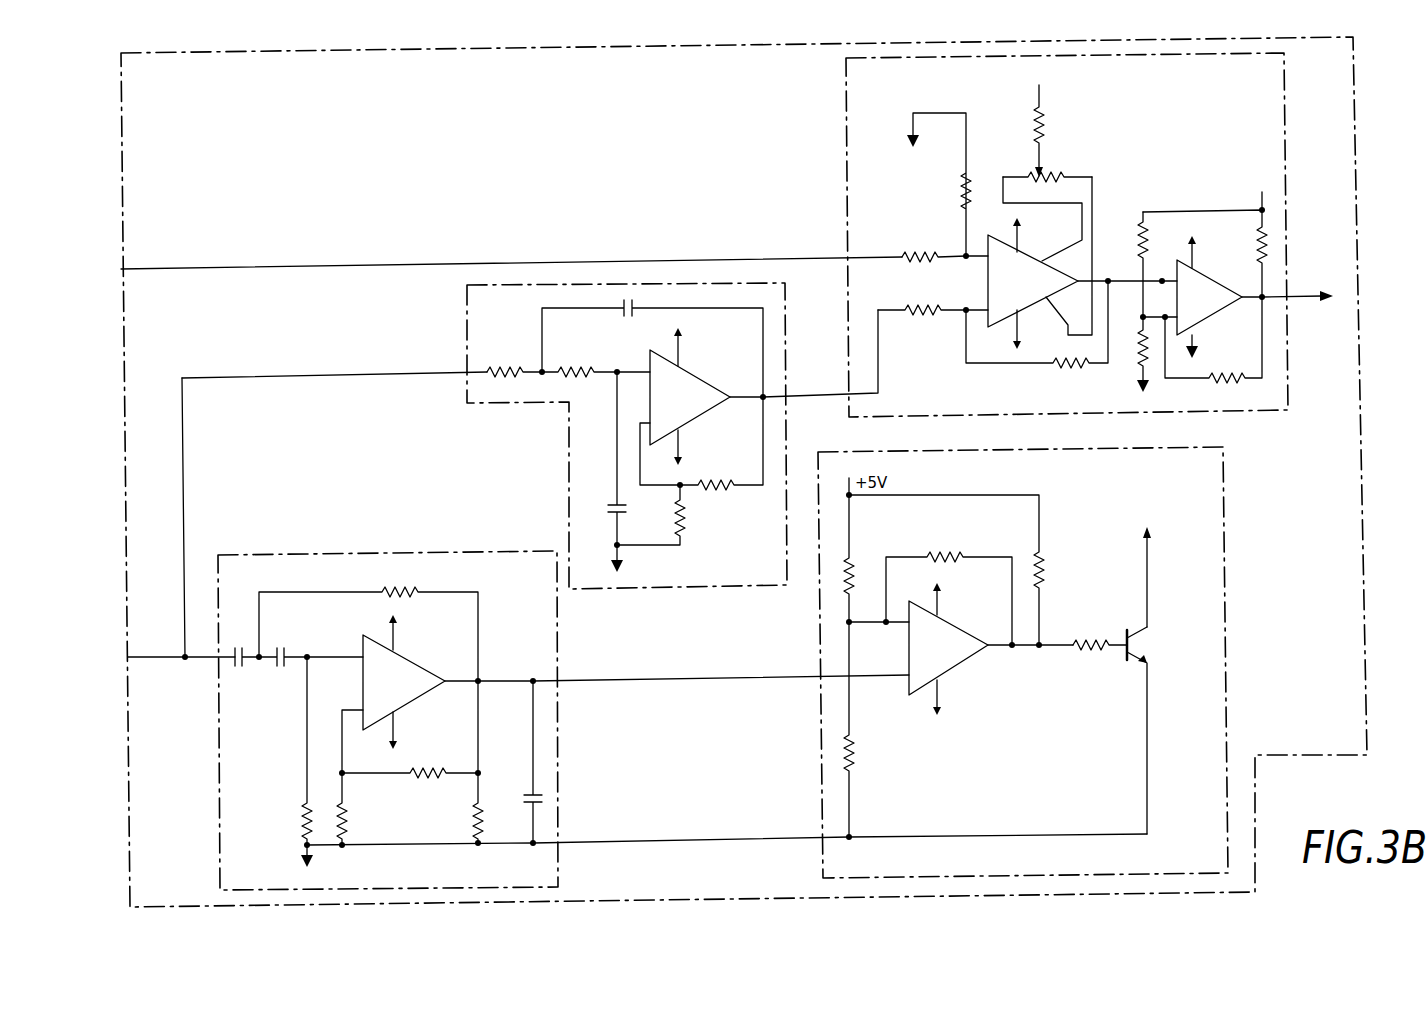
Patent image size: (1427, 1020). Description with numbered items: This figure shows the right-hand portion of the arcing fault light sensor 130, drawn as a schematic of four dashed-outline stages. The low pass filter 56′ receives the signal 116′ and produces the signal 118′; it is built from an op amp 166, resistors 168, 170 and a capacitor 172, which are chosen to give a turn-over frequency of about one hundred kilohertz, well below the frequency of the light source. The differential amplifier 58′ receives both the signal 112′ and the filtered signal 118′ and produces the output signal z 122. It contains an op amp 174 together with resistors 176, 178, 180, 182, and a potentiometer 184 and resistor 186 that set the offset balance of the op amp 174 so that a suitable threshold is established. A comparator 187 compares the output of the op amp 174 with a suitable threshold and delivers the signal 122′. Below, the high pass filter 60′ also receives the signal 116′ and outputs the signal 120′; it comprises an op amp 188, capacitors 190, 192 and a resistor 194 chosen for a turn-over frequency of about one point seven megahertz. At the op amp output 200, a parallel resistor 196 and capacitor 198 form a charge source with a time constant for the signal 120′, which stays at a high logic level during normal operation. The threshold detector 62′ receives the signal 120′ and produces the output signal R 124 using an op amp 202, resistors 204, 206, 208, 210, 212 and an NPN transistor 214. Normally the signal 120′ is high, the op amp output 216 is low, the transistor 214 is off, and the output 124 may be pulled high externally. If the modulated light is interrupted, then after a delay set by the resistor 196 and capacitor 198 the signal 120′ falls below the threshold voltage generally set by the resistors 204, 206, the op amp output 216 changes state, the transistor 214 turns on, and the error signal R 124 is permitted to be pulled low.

The arcing fault light sensor 130 is at (1356, 105).
The differential amplifier 58′ is at (846, 132).
The low pass filter 56′ is at (467, 309).
The high pass filter 60′ is at (218, 798).
The threshold detector 62′ is at (823, 784).
The signal 112′ is at (202, 263).
The signal 116′ is at (162, 662).
The signal 118′ is at (826, 392).
The signal 120′ is at (637, 681).
The signal 122′ is at (1307, 290).
The signal z 122 is at (1127, 274).
The op amp 166 is at (698, 375).
The resistor 168 is at (508, 365).
The resistor 170 is at (575, 370).
The capacitor 172 is at (617, 506).
The op amp 174 is at (987, 281).
The resistor 176 is at (968, 149).
The resistor 178 is at (921, 251).
The resistor 180 is at (926, 313).
The resistor 182 is at (1065, 368).
The potentiometer 184 is at (1067, 178).
The resistor 186 is at (1044, 115).
The comparator 187 is at (1208, 320).
The op amp 188 is at (420, 661).
The capacitor 190 is at (243, 665).
The capacitor 192 is at (279, 646).
The resistor 194 is at (306, 818).
The resistor 196 is at (478, 818).
The capacitor 198 is at (533, 792).
The op amp output 200 is at (482, 679).
The op amp 202 is at (973, 660).
The resistor 204 is at (853, 557).
The resistor 206 is at (855, 760).
The resistor 208 is at (940, 552).
The resistor 210 is at (1044, 560).
The resistor 212 is at (1100, 637).
The NPN transistor 214 is at (1140, 634).
The op amp output 216 is at (1041, 650).
The output error signal R 124 is at (1148, 575).